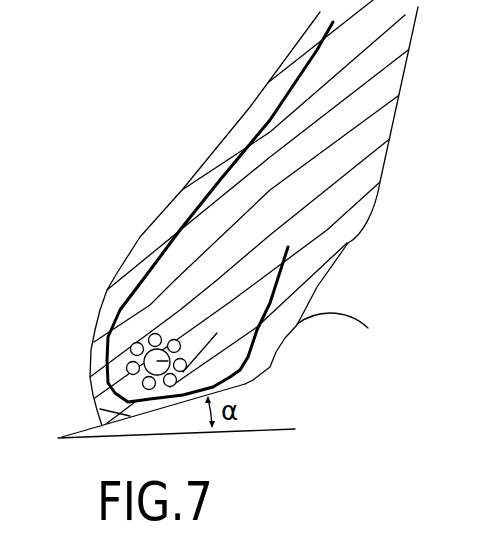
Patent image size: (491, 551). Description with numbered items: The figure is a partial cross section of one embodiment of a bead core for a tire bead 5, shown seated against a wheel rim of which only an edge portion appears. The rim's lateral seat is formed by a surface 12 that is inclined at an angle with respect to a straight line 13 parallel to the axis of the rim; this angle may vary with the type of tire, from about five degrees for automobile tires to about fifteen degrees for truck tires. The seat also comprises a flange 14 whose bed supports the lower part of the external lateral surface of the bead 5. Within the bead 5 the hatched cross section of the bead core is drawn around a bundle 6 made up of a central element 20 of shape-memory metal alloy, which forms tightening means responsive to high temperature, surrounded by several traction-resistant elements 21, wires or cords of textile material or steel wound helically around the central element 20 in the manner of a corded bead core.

The bead 5 is at (124, 254).
The fiber bundle 6 is at (174, 331).
The surface 12 is at (100, 404).
The straight line 13 is at (245, 431).
The flange 14 is at (333, 313).
The central element 20 is at (211, 340).
The traction-resistant elements 21 is at (131, 351).